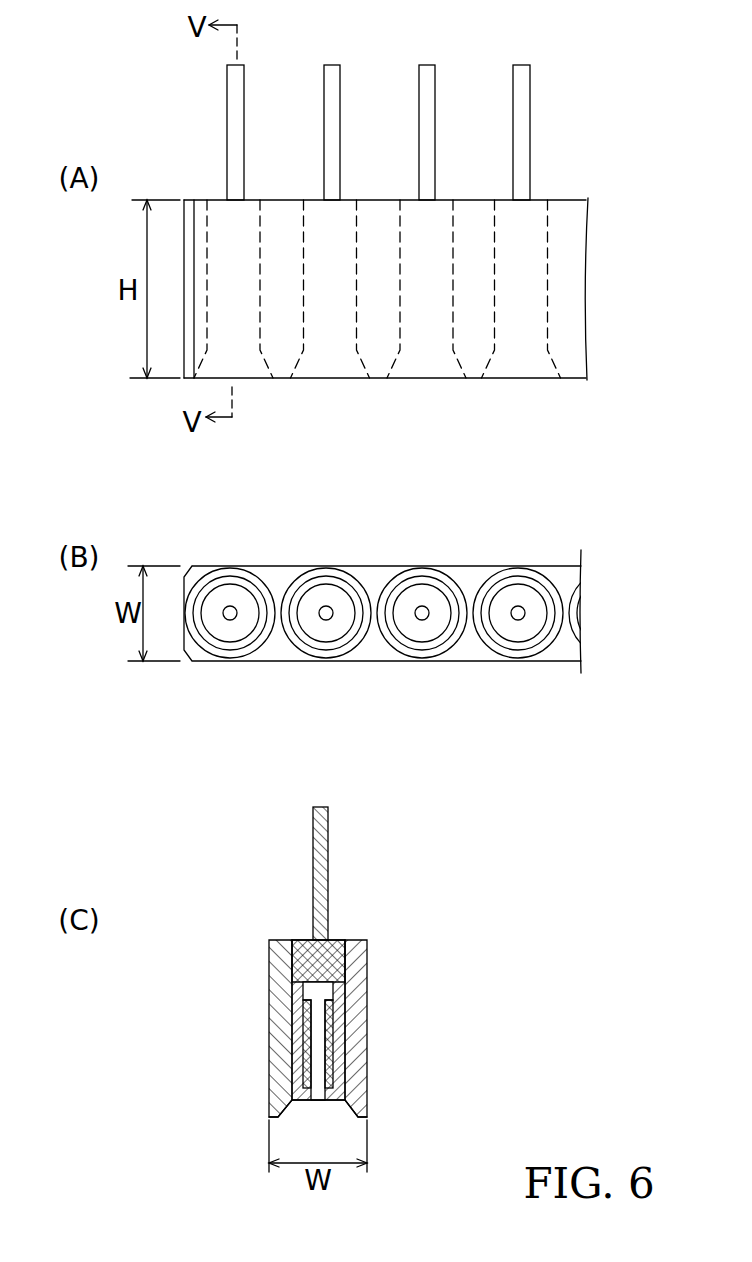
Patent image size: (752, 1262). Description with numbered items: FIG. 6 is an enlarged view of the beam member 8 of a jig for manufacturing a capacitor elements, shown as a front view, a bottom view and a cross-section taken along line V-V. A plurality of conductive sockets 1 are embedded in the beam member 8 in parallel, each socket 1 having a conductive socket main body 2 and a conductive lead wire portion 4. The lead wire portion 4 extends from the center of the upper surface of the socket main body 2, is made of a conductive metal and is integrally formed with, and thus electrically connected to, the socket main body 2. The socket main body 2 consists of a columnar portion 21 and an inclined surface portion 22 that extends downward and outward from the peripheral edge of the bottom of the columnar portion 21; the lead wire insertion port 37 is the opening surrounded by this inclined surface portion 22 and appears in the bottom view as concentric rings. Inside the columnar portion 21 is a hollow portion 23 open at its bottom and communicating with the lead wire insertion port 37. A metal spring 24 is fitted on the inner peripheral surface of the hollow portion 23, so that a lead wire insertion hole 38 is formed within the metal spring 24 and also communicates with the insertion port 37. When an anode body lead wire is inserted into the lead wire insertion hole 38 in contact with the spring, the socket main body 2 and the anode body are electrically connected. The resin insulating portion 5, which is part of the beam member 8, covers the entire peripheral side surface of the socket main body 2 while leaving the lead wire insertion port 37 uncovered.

The socket 1 is at (243, 342).
The socket main body 2 is at (248, 578).
The lead wire portion 4 is at (232, 95).
The insulating portion 5 is at (568, 258).
The beam member 8 is at (566, 125).
The columnar portion 21 is at (310, 958).
The inclined surface portion 22 is at (238, 642).
The hollow portion 23 is at (313, 993).
The metal spring 24 is at (308, 1045).
The lead wire insertion port 37 is at (217, 600).
The lead wire insertion hole 38 is at (230, 603).